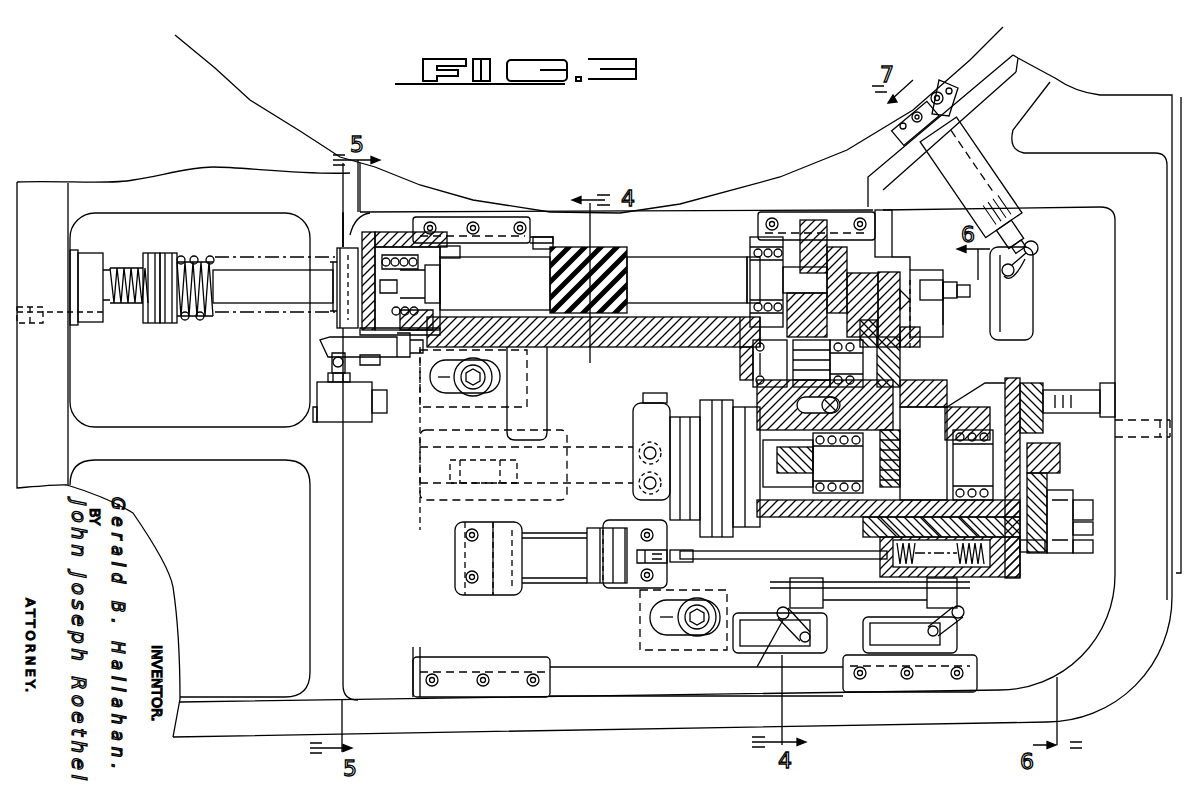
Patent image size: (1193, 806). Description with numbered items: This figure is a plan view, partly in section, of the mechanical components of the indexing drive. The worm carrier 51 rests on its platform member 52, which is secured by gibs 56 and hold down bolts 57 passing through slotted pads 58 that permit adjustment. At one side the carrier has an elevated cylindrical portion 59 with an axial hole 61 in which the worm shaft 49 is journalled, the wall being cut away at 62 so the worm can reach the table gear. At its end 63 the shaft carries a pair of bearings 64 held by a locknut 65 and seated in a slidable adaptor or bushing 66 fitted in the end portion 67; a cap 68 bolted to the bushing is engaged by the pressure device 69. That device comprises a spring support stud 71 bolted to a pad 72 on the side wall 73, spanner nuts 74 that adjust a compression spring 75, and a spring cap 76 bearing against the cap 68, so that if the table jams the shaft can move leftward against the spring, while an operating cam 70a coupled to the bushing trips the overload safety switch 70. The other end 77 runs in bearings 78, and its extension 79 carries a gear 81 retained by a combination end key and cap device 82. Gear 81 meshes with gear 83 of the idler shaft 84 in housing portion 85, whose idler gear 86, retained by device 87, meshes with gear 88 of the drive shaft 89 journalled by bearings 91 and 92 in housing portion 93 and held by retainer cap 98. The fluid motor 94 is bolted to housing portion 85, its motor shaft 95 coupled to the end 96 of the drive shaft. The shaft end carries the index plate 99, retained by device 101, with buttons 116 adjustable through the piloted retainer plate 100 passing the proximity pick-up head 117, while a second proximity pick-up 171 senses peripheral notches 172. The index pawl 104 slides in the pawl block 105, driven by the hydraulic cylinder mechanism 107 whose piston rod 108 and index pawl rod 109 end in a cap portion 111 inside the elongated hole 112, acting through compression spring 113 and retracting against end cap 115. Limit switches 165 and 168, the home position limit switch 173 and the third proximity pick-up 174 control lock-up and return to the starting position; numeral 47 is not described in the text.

The worm 47 is at (625, 256).
The worm shaft 49 is at (698, 281).
The worm carrier 51 is at (418, 538).
The platform member 52 is at (530, 620).
The gibs 56 is at (497, 240).
The hold down bolts 57 is at (497, 382).
The slotted pads 58 is at (507, 360).
The cylindrical portion 59 is at (600, 367).
The axially extending hole 61 is at (685, 322).
The cut away 62 is at (540, 250).
The end of worm shaft 63 is at (530, 295).
The bearings 64 is at (432, 272).
The locknut 65 is at (393, 240).
The adaptor or bushing 66 is at (447, 250).
The end portion 67 is at (428, 250).
The cap 68 is at (355, 245).
The pressure device 69 is at (162, 316).
The overload safety switch 70 is at (332, 392).
The operating cam 70a is at (330, 366).
The spring support stud 71 is at (247, 298).
The pad 72 is at (88, 250).
The side wall 73 is at (60, 389).
The spanner nuts 74 is at (155, 252).
The compression spring 75 is at (210, 322).
The spring cap 76 is at (338, 322).
The end of worm shaft 77 is at (752, 277).
The bearings 78 is at (780, 240).
The extension 79 is at (818, 284).
The gear 81 is at (808, 245).
The combination end key and cap device 82 is at (880, 235).
The gear 83 is at (828, 363).
The idler shaft 84 is at (925, 370).
The housing portion 85 is at (757, 391).
The idler gear 86 is at (925, 337).
The combination key and cap device 87 is at (935, 350).
The gear 88 is at (898, 447).
The drive shaft 89 is at (907, 458).
The bearings 91 is at (952, 496).
The bearings 92 is at (876, 463).
The housing portion 93 is at (845, 532).
The fluid motor 94 is at (640, 494).
The motor shaft 95 is at (888, 511).
The end of drive shaft 96 is at (825, 407).
The retainer cap 98 is at (997, 388).
The index plate 99 is at (1032, 383).
The piloted retainer plate 100 is at (1097, 385).
The combination key and cap retainer device 101 is at (1055, 453).
The index pawl 104 is at (1005, 571).
The pawl block 105 is at (1005, 556).
The hydraulic cylinder mechanism 107 is at (503, 537).
The piston rod 108 is at (672, 564).
The index pawl rod 109 is at (728, 562).
The cap portion 111 is at (930, 528).
The elongated hole 112 is at (948, 570).
The compression spring 113 is at (905, 588).
The end cap 115 is at (878, 562).
The button 116 is at (1052, 481).
The proximity pick-up head 117 is at (1093, 503).
The limit switch 165 is at (966, 623).
The limit switch 168 is at (780, 647).
The second proximity pick-up 171 is at (1093, 526).
The peripheral notches or spokes 172 is at (1093, 550).
The home position limit switch 173 is at (1034, 292).
The third proximity pick-up 174 is at (945, 302).